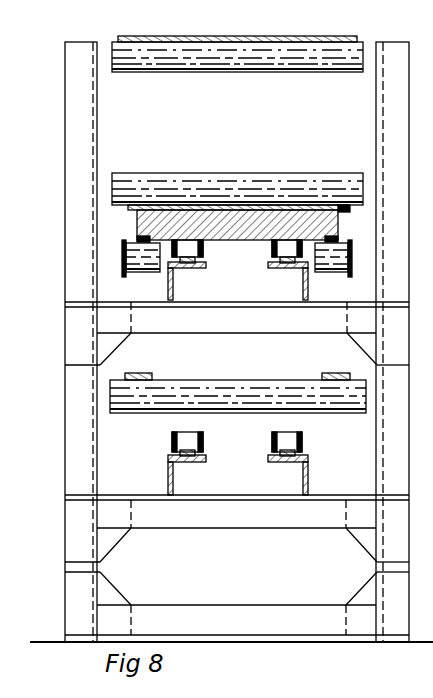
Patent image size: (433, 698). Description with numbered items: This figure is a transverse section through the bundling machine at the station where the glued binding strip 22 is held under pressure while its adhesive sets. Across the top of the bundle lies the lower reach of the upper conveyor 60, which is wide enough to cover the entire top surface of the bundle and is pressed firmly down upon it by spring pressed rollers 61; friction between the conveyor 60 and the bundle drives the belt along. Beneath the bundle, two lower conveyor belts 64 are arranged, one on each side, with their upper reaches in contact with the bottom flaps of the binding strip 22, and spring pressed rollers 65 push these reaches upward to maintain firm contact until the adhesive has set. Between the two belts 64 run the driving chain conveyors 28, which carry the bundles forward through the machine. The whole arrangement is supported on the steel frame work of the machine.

The conveyor 60 is at (345, 36).
The spring pressed rollers 61 is at (275, 173).
The binding strip 22 is at (137, 225).
The conveyor belts 64 is at (122, 242).
The spring pressed rollers 65 is at (341, 411).
The chain conveyor 28 is at (272, 250).